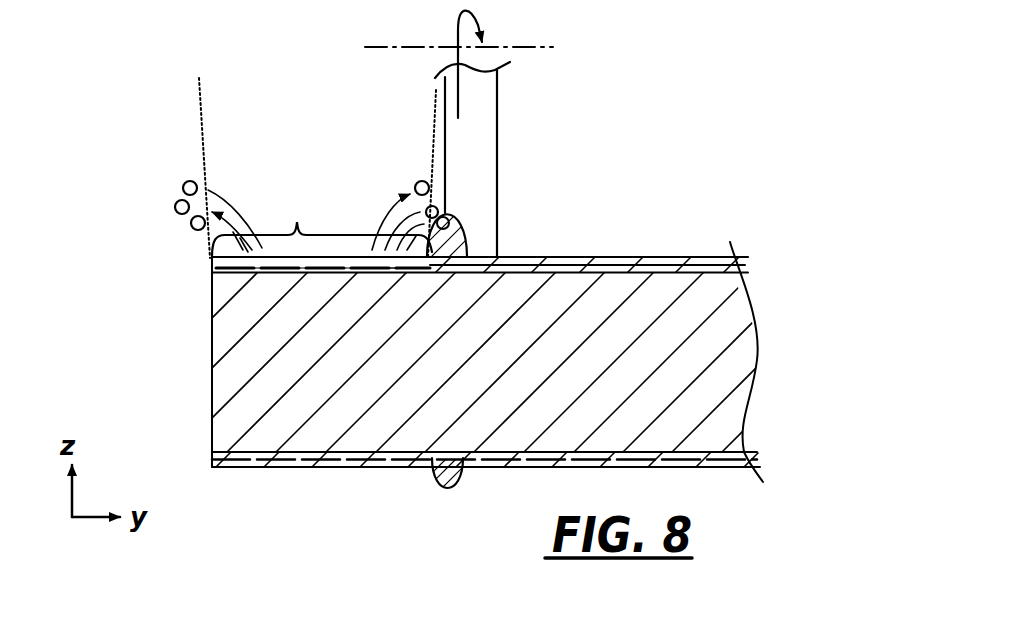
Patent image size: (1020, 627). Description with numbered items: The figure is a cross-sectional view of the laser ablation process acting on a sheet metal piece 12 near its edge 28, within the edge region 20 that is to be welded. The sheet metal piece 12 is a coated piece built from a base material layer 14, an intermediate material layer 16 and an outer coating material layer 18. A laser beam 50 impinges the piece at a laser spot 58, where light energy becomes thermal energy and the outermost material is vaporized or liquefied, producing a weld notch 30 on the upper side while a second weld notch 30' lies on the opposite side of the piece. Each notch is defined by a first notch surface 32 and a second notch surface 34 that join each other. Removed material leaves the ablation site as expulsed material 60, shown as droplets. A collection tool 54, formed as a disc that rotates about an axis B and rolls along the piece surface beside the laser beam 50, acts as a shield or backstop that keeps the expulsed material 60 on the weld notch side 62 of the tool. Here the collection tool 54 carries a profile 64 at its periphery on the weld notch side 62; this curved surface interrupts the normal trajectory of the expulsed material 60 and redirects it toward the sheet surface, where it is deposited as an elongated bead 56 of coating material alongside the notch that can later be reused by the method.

The sheet metal piece 12 is at (683, 174).
The base material layer 14 is at (727, 350).
The intermediate material layer 16 is at (743, 268).
The coating material layer 18 is at (690, 257).
The edge region 20 is at (326, 490).
The edge 28 is at (212, 413).
The weld notch 30 is at (323, 211).
The weld notch 30' is at (424, 491).
The first notch surface 32 is at (427, 259).
The second notch surface 34 is at (233, 266).
The laser beam 50 is at (202, 135).
The collection tool 54 is at (500, 178).
The bead 56 is at (466, 256).
The laser spot 58 is at (322, 222).
The expulsed material 60 is at (416, 185).
The weld notch side 62 is at (445, 115).
The profile 64 is at (437, 212).
The axis B is at (555, 45).